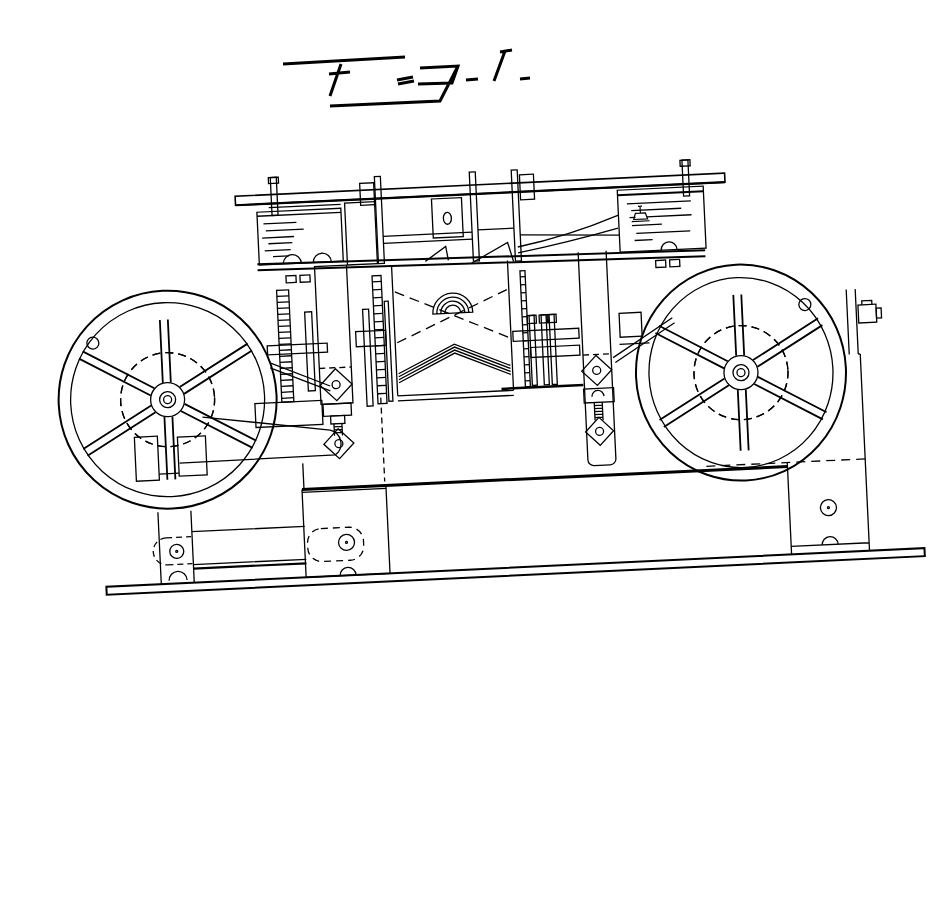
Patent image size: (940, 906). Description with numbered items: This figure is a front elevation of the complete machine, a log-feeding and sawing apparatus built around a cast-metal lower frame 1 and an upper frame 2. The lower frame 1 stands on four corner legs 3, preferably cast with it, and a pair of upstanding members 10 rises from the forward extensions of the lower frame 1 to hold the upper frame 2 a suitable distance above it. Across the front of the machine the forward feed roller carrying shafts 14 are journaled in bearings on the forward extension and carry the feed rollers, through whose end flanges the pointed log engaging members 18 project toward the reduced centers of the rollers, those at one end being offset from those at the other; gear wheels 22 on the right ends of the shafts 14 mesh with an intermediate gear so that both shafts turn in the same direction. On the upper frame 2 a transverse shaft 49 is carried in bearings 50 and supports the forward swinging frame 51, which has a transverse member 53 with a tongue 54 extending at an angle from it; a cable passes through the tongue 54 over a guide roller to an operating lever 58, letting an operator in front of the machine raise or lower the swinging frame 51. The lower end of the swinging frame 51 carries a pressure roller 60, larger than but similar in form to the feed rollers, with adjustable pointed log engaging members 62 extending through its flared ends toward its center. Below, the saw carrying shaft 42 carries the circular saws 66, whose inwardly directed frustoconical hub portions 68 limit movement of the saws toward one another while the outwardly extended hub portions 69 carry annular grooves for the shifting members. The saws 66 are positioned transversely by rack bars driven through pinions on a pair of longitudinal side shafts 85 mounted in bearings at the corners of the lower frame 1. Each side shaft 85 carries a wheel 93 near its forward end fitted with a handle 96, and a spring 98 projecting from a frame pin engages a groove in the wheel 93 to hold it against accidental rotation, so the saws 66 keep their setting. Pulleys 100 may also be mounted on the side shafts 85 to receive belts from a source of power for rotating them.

The lower frame 1 is at (465, 428).
The upper frame 2 is at (720, 218).
The corner legs 3 is at (373, 500).
The upstanding members 10 is at (468, 365).
The forward feed roller carrying shafts 14 is at (548, 437).
The pointed log engaging members 18 is at (485, 376).
The gear wheels 22 is at (288, 286).
The saw carrying shaft 42 is at (692, 405).
The transverse shaft 49 is at (612, 183).
The bearings 50 is at (287, 172).
The forward swinging frame 51 is at (390, 212).
The transverse member 53 is at (568, 227).
The tongue 54 is at (455, 196).
The operating lever 58 is at (492, 200).
The pressure roller 60 is at (458, 290).
The pointed log engaging members 62 is at (470, 265).
The circular saws 66 is at (531, 300).
The hub portions 68 is at (378, 405).
The outwardly extended hub portions 69 is at (374, 399).
The longitudinal side shafts 85 is at (152, 386).
The wheel 93 is at (82, 449).
The handle 96 is at (94, 318).
The spring 98 is at (328, 372).
The pulleys 100 is at (182, 353).